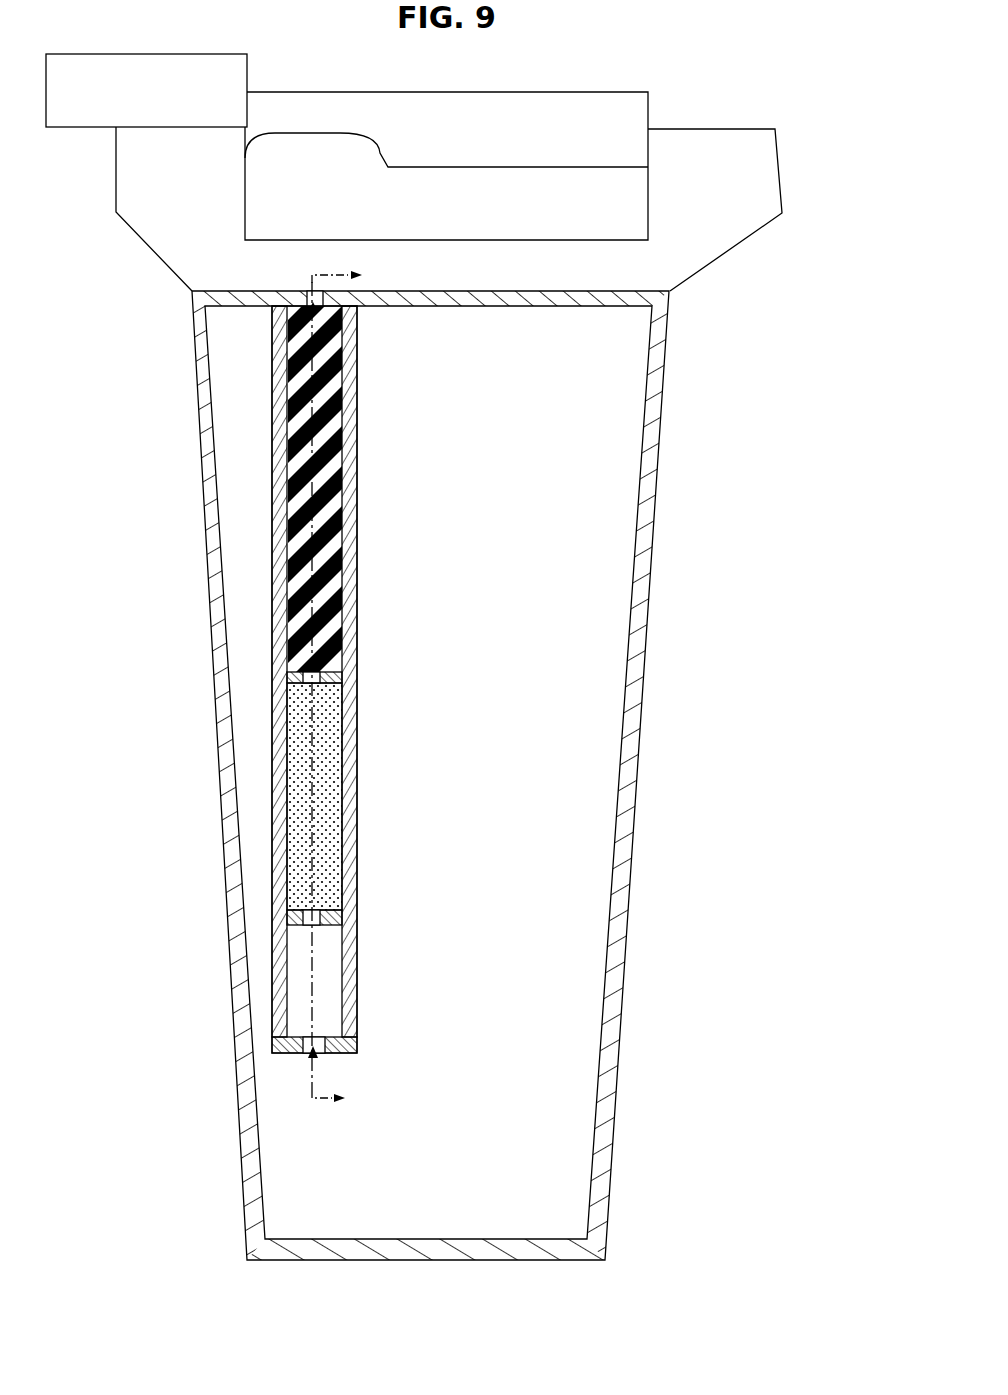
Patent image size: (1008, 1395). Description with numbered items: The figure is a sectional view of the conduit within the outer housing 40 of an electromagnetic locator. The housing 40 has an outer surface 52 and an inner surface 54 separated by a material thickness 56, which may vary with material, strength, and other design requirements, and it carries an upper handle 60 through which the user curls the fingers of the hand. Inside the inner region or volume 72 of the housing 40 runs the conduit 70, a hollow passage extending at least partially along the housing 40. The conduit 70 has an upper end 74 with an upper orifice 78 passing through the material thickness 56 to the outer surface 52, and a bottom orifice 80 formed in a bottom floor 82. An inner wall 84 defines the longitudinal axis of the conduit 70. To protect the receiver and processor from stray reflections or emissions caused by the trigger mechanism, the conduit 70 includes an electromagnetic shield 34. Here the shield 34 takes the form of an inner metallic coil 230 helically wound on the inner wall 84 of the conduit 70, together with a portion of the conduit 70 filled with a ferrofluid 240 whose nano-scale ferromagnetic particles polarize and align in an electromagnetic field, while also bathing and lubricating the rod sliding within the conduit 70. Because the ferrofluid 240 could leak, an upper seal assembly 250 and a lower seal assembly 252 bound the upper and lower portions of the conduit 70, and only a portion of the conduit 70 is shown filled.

The outer housing 40 is at (756, 306).
The outer surface 52 is at (473, 772).
The inner surface 54 is at (717, 417).
The material thickness 56 is at (590, 455).
The upper handle 60 is at (570, 125).
The conduit 70 is at (272, 462).
The inner region or volume 72 is at (240, 415).
The upper end 74 is at (282, 343).
The upper orifice 78 is at (310, 311).
The bottom orifice 80 is at (310, 1062).
The bottom floor 82 is at (300, 1045).
The inner wall 84 is at (290, 843).
The electromagnetic shield 34 is at (420, 307).
The inner metallic coil 230 is at (367, 307).
The ferrofluid 240 is at (325, 765).
The upper seal assembly 250 is at (295, 676).
The lower seal assembly 252 is at (290, 916).